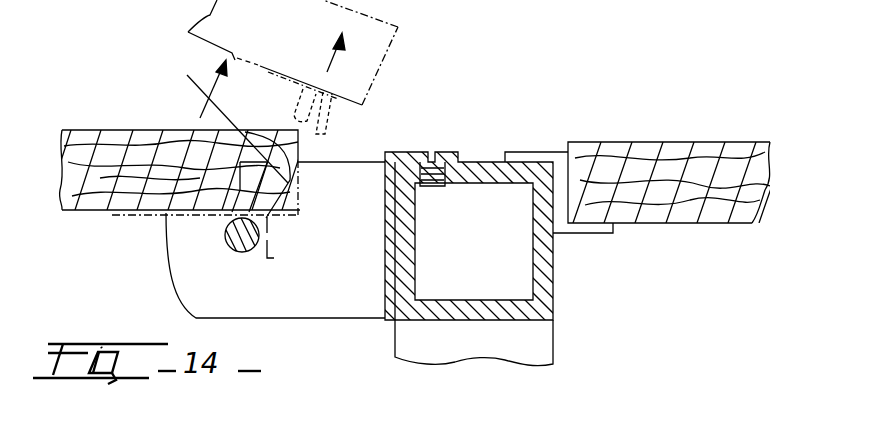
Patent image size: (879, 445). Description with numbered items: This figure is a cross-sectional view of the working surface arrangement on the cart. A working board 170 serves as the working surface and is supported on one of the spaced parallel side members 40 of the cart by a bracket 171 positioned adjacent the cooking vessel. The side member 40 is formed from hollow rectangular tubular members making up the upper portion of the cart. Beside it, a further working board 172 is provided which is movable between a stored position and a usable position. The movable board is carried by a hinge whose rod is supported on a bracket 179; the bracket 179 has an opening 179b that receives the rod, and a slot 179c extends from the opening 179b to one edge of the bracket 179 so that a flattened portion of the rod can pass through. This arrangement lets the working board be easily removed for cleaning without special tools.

The side member 40 is at (553, 285).
The working board 170 is at (713, 142).
The bracket 171 is at (545, 150).
The further working board 172 is at (132, 130).
The bracket 179 is at (334, 314).
The opening 179b is at (226, 233).
The slot 179c is at (218, 156).